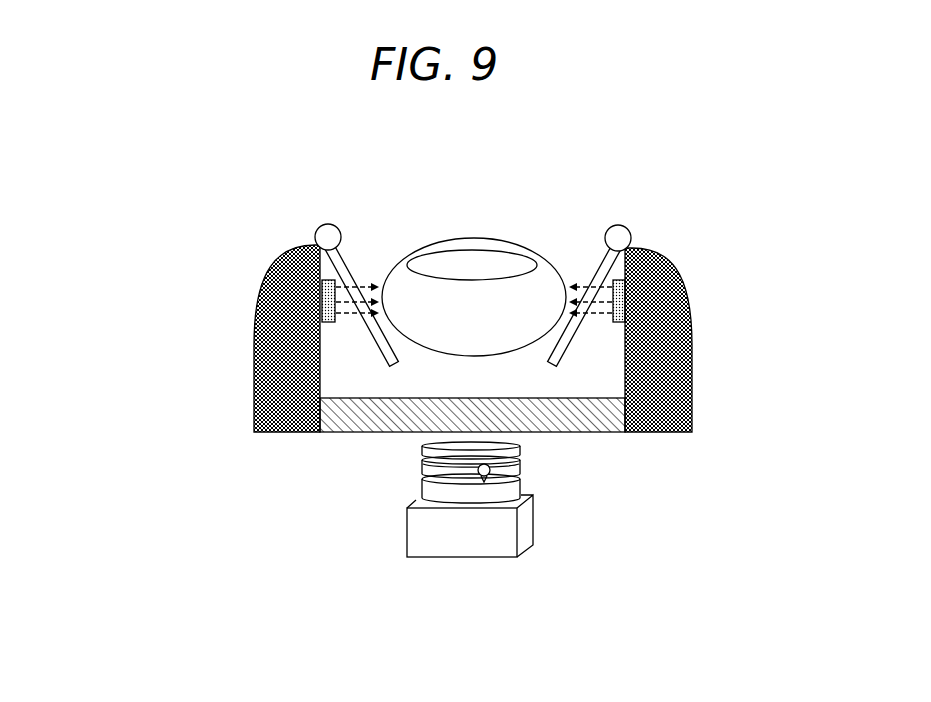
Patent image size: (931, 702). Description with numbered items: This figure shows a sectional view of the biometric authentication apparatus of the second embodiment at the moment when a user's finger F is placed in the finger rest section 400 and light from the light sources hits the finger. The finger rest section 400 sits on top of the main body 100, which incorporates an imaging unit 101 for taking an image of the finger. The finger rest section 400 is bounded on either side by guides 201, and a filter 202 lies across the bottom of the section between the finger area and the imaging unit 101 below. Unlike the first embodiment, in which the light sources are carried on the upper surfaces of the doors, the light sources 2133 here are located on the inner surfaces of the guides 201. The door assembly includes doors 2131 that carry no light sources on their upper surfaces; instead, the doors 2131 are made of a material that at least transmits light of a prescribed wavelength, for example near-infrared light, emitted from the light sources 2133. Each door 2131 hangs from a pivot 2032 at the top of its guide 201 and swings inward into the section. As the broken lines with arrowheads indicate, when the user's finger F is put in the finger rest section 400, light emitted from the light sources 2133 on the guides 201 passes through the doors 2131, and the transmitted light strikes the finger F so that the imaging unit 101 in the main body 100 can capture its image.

The guides 201 is at (254, 402).
The filter 202 is at (340, 432).
The user's finger F is at (490, 240).
The doors 2131 is at (540, 356).
The pivot shaft 2032 is at (327, 225).
The light sources 2133 is at (330, 323).
The imaging unit 101 is at (468, 558).
The finger rest section 400 is at (123, 183).
The main body 100 is at (122, 450).